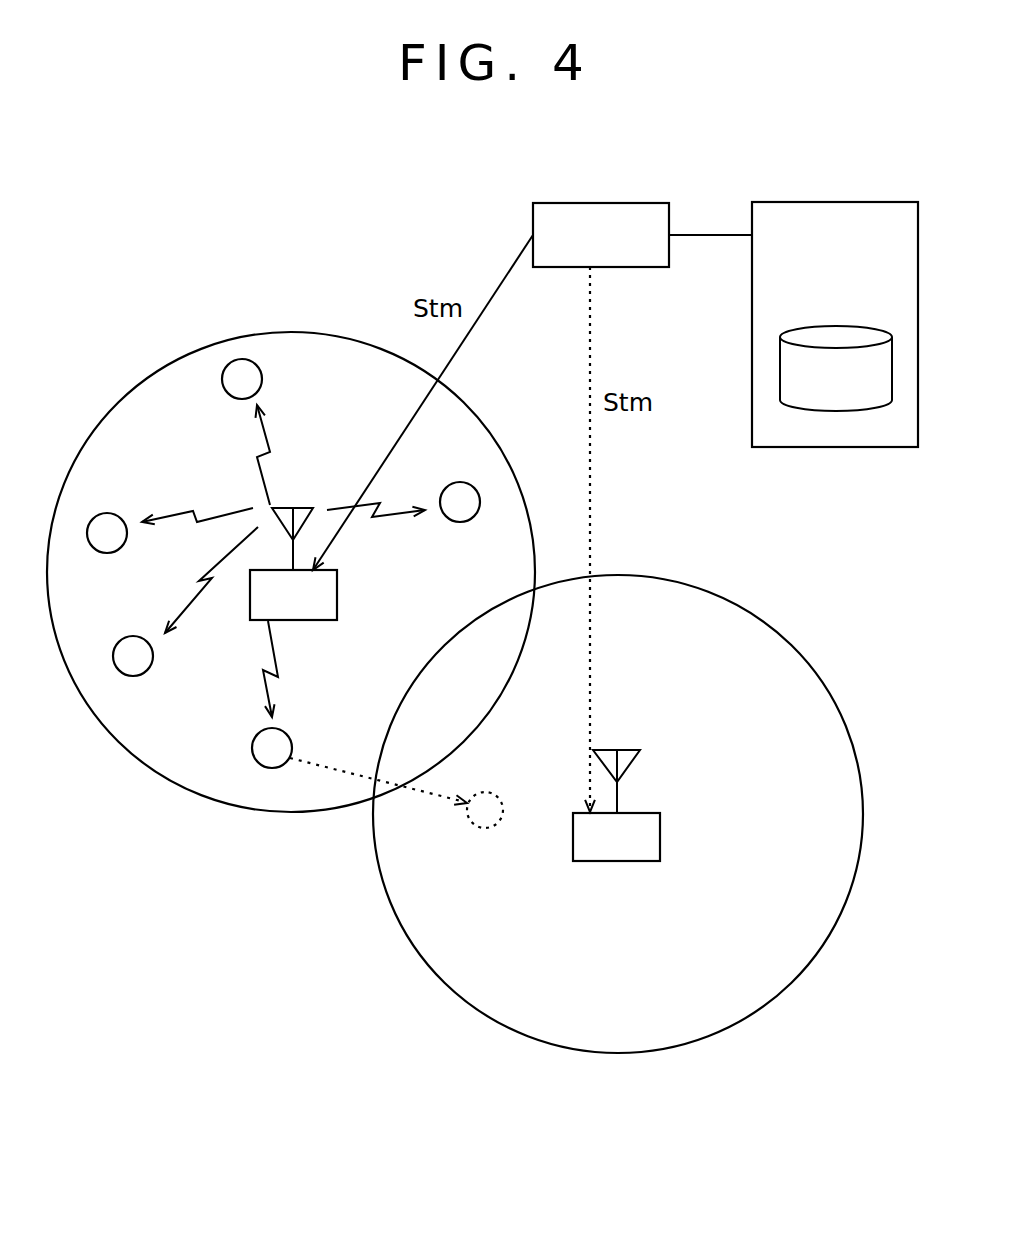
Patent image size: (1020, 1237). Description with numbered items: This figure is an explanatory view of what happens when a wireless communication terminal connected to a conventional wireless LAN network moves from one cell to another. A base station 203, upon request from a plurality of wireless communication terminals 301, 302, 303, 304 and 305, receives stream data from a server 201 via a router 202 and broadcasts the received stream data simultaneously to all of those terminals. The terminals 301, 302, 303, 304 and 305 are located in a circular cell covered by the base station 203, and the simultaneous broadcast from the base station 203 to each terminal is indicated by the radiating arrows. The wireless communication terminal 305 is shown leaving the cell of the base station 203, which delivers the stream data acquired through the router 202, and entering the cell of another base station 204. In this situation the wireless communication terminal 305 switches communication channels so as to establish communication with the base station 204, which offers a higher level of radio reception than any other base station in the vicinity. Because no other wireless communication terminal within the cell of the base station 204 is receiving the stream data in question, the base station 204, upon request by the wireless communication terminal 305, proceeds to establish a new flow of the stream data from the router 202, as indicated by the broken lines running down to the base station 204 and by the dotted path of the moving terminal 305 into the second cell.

The server 201 is at (775, 202).
The router 202 is at (555, 203).
The base station 203 is at (337, 605).
The base station 204 is at (660, 840).
The wireless communication terminal 301 is at (460, 522).
The wireless communication terminal 302 is at (262, 379).
The wireless communication terminal 303 is at (107, 513).
The wireless communication terminal 304 is at (132, 636).
The wireless communication terminal 305 is at (252, 750).